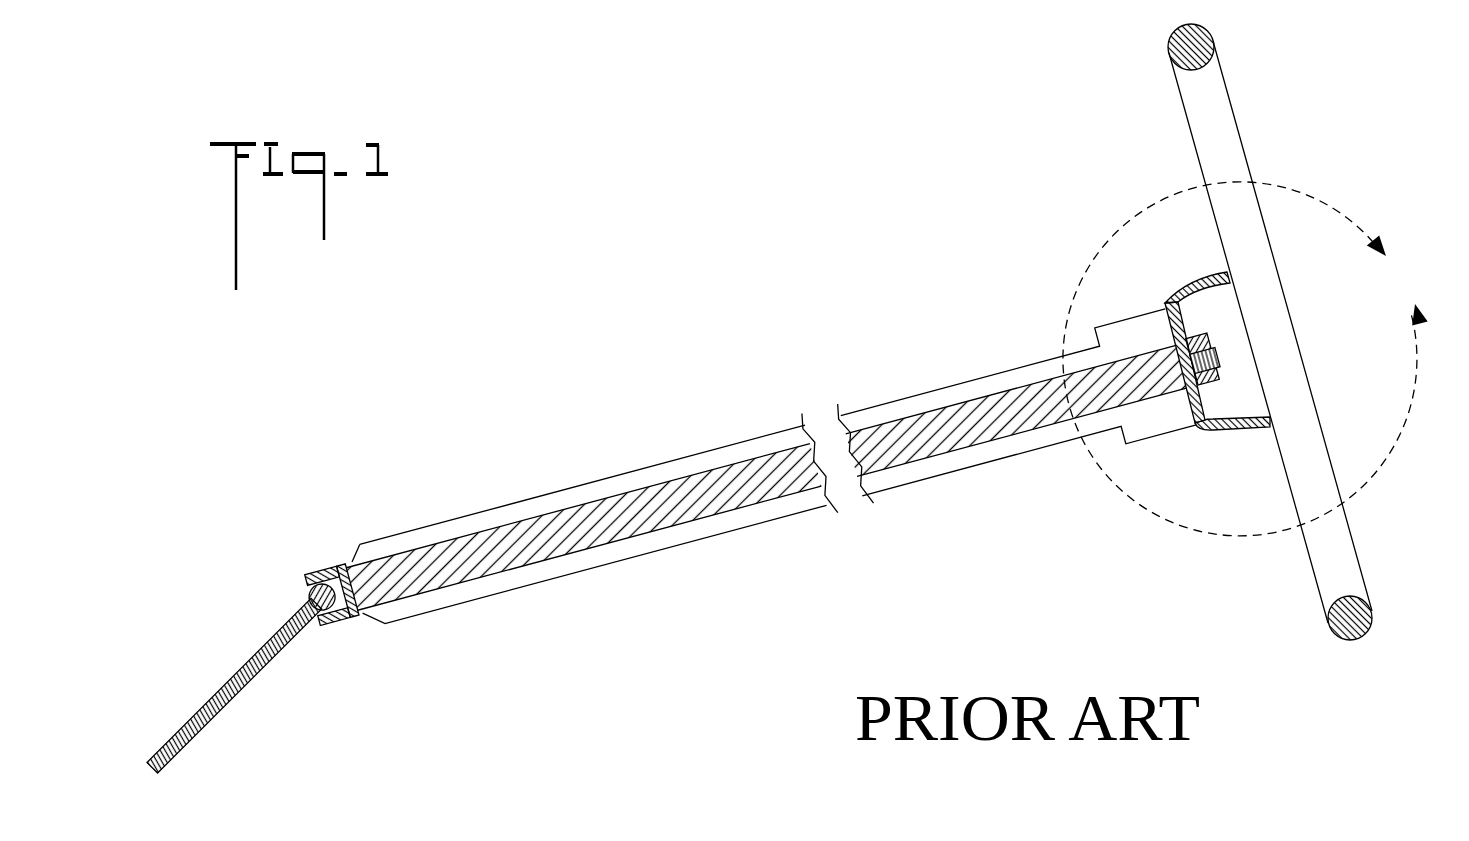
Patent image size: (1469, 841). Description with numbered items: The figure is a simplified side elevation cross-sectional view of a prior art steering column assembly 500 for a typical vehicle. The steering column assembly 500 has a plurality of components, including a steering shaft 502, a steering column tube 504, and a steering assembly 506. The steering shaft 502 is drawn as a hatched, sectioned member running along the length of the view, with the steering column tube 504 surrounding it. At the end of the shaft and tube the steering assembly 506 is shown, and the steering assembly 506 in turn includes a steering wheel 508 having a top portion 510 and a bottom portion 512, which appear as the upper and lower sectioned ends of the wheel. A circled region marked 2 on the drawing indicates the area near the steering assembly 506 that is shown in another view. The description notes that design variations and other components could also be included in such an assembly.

The steering column assembly 500 is at (708, 339).
The steering shaft 502 is at (1042, 427).
The steering column tube 504 is at (982, 375).
The steering assembly 506 is at (1186, 271).
The steering wheel 508 is at (1303, 360).
The top portion 510 is at (1224, 83).
The bottom portion 512 is at (1367, 597).
The section view indicator for FIG. 2 is at (1245, 359).